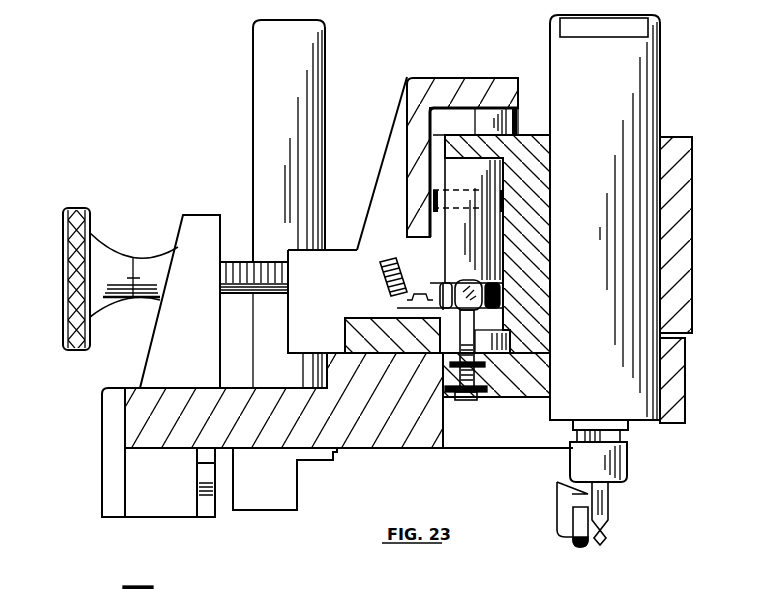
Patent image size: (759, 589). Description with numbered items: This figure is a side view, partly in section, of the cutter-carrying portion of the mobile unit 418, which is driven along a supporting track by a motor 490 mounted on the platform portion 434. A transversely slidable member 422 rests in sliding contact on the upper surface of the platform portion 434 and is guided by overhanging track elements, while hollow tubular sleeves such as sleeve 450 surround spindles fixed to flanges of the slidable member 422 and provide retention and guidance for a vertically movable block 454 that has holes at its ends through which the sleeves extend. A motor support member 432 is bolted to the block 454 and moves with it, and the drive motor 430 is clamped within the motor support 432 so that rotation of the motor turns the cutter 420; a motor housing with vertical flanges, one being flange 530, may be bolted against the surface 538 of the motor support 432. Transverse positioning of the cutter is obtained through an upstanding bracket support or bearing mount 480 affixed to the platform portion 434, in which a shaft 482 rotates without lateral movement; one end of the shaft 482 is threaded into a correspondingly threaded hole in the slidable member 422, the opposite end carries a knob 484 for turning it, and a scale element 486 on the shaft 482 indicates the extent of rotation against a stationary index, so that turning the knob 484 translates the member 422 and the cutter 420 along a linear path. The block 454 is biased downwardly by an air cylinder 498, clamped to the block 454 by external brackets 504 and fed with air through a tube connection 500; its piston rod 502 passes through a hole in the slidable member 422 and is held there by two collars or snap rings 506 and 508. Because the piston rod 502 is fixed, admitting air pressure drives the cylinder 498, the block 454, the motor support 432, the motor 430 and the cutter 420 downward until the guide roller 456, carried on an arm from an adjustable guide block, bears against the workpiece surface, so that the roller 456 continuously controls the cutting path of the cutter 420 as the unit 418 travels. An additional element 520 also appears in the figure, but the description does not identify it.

The mobile unit 418 is at (128, 377).
The cutter 420 is at (598, 517).
The transversely slidable member 422 is at (393, 150).
The drive motor 430 is at (640, 108).
The motor support member 432 is at (678, 226).
The platform portion 434 is at (383, 440).
The hollow tubular sleeve 450 is at (493, 125).
The vertically movable block 454 is at (530, 140).
The guide roller 456 is at (581, 547).
The bracket support or bearing mount 480 is at (180, 301).
The shaft 482 is at (238, 262).
The knob 484 is at (80, 208).
The scale element 486 is at (150, 262).
The motor 490 is at (262, 40).
The air cylinder 498 is at (452, 233).
The tube connection 500 is at (395, 286).
The piston rod 502 is at (460, 334).
The external brackets 504 is at (430, 190).
The collar or snap ring 506 is at (458, 401).
The collar or snap ring 508 is at (508, 396).
The conduit 520 is at (398, 588).
The vertical flange 530 is at (163, 586).
The surface of motor support 538 is at (690, 303).